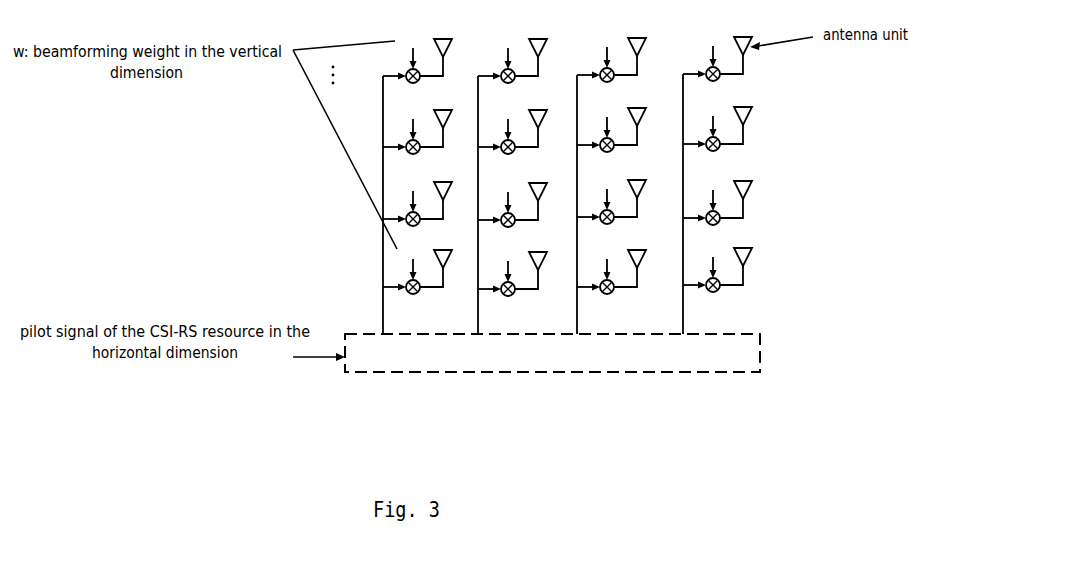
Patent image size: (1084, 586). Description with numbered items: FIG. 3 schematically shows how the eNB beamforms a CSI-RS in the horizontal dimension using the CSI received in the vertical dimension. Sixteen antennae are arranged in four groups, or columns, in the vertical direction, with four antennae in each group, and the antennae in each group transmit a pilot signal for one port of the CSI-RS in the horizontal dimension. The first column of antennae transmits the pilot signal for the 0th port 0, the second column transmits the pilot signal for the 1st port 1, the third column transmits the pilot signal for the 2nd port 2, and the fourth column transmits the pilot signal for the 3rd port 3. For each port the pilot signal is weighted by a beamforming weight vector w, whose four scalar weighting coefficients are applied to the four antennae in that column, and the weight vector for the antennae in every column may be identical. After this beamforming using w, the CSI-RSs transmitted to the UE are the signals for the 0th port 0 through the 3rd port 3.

The 0th port 0 is at (405, 198).
The 1st port 1 is at (502, 198).
The 2nd port 2 is at (600, 198).
The 3rd port 3 is at (713, 198).